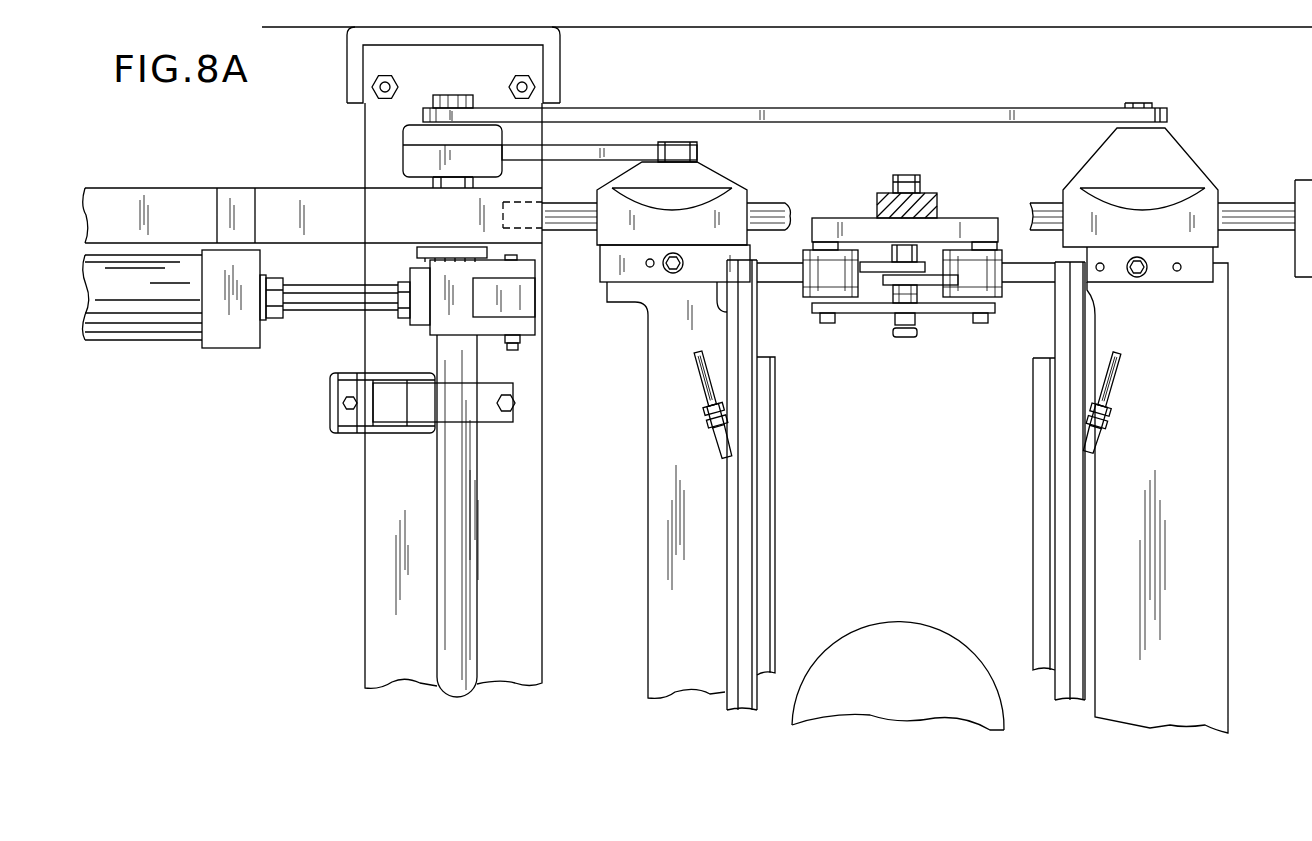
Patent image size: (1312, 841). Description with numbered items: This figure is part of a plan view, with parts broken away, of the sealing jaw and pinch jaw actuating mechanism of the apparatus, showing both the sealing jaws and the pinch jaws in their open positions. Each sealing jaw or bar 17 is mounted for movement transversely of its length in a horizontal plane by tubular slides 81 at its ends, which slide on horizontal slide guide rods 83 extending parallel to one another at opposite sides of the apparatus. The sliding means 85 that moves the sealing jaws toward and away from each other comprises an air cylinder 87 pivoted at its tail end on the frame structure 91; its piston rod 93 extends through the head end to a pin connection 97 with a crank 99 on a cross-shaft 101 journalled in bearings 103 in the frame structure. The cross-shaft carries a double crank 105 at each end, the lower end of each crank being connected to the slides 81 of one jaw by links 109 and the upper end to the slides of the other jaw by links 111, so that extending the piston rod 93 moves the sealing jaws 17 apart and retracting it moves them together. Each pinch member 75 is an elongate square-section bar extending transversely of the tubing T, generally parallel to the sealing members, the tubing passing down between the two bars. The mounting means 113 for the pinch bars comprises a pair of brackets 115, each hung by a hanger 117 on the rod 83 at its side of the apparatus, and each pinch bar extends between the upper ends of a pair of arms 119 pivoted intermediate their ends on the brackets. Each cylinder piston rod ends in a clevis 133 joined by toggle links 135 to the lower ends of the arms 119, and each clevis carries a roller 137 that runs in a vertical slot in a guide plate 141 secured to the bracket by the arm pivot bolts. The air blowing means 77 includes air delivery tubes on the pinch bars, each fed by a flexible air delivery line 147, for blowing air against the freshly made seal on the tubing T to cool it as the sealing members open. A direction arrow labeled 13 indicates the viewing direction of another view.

The direction arrow 13 is at (1132, 360).
The sealing jaw 17 is at (775, 512).
The pinch member 75 is at (745, 553).
The air blowing means 77 is at (700, 430).
The tubular slide 81 is at (717, 173).
The slide guide rod 83 is at (787, 203).
The sliding means 85 is at (166, 356).
The air cylinder 87 is at (190, 333).
The frame structure 91 is at (152, 198).
The piston rod 93 is at (320, 302).
The pin connection 97 is at (510, 343).
The crank 99 is at (522, 300).
The cross-shaft 101 is at (460, 522).
The bearing 103 is at (417, 250).
The double crank 105 is at (408, 155).
The link 109 is at (612, 150).
The link 111 is at (833, 118).
The pinch bar mounting means 113 is at (920, 168).
The bracket 115 is at (843, 220).
The hanger 117 is at (927, 207).
The arm 119 is at (785, 285).
The clevis 133 is at (920, 253).
The toggle link 135 is at (873, 288).
The roller 137 is at (923, 322).
The guide plate 141 is at (873, 313).
The flexible air delivery line 147 is at (697, 362).
The tubing T is at (875, 603).